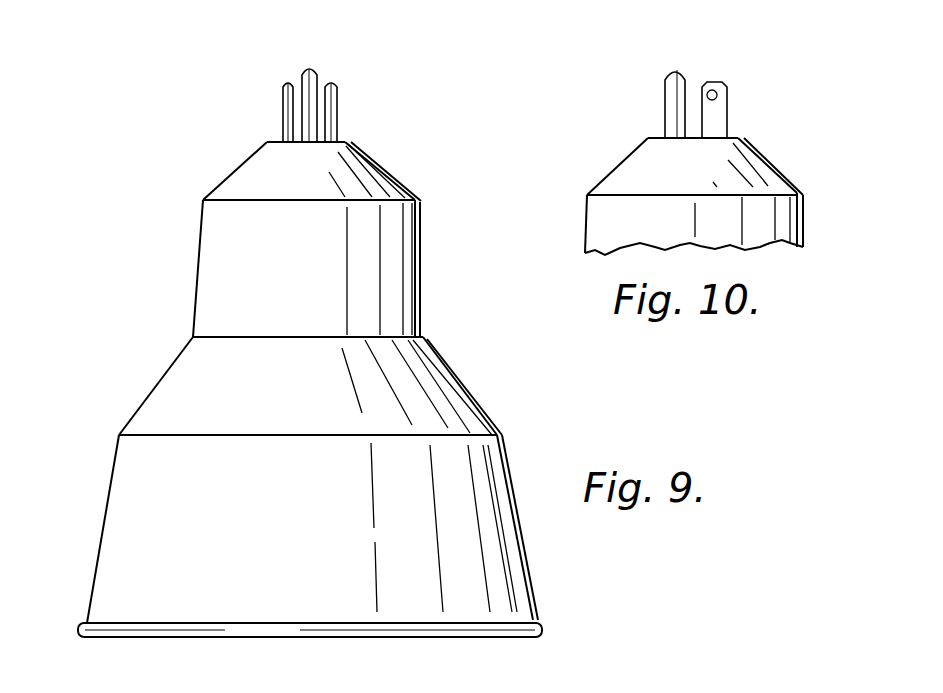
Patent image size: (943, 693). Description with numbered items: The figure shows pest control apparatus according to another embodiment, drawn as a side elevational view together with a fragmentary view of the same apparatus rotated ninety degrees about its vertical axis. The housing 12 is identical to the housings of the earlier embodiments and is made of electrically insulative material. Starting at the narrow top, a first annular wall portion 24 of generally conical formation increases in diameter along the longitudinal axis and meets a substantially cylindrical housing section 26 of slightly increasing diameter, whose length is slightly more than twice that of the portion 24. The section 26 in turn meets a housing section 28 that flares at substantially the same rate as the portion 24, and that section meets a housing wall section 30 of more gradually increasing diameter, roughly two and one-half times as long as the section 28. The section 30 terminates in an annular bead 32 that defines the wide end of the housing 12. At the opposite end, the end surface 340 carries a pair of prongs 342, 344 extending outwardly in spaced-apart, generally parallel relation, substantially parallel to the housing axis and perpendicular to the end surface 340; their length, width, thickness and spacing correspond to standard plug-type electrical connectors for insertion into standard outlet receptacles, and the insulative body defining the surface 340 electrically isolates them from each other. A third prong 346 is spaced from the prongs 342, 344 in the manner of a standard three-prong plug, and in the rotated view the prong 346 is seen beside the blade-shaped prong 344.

In FIG. 9, the housing 12 is at (437, 318).
In FIG. 9, the first annular wall portion 24 is at (236, 170).
In FIG. 10, the first annular wall portion 24 is at (758, 167).
In FIG. 9, the housing section 26 is at (208, 293).
In FIG. 10, the housing section 26 is at (608, 210).
In FIG. 9, the housing section 28 is at (158, 382).
In FIG. 9, the housing wall section 30 is at (105, 520).
In FIG. 9, the annular bead 32 is at (540, 622).
In FIG. 9, the end surface 340 is at (350, 142).
In FIG. 10, the end surface 340 is at (658, 138).
In FIG. 9, the prong 342 is at (285, 92).
In FIG. 9, the prong 344 is at (333, 100).
In FIG. 10, the prong 344 is at (720, 100).
In FIG. 9, the third prong 346 is at (309, 68).
In FIG. 10, the third prong 346 is at (673, 82).